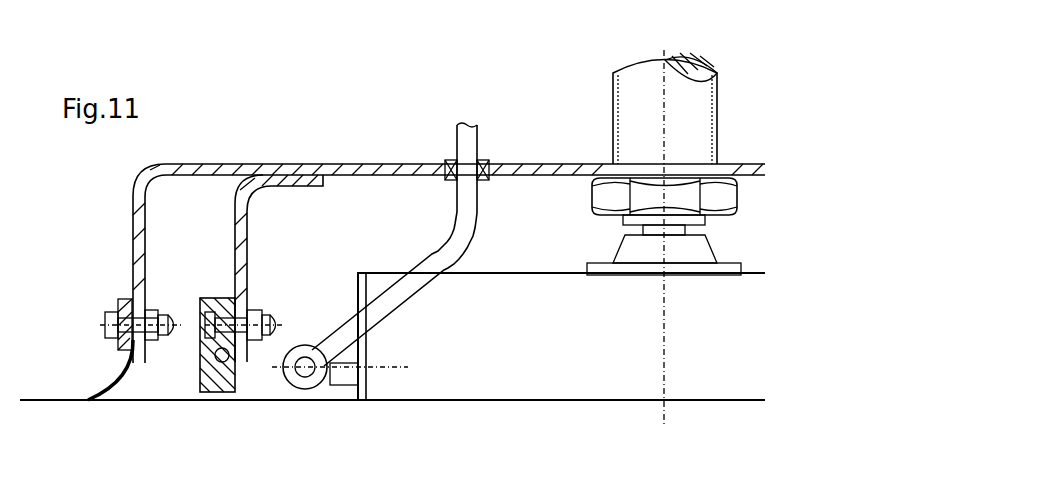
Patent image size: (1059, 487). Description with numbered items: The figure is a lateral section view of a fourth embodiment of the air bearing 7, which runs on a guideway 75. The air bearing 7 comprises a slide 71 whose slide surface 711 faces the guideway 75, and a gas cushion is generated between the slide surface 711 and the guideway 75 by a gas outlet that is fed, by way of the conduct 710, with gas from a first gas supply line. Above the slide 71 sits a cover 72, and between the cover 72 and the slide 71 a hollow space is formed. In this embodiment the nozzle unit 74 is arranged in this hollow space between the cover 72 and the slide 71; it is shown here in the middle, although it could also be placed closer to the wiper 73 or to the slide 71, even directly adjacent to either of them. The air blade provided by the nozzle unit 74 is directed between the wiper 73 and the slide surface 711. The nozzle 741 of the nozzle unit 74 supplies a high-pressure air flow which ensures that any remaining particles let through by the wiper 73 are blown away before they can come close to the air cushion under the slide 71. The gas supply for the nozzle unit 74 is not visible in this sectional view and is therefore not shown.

The air bearing 7 is at (262, 119).
The slide 71 is at (561, 336).
The slide surface 711 is at (608, 398).
The cover 72 is at (327, 162).
The wiper 73 is at (92, 398).
The nozzle unit 74 is at (205, 296).
The nozzle 741 is at (196, 388).
The guideway 75 is at (147, 405).
The conduct 710 is at (458, 218).